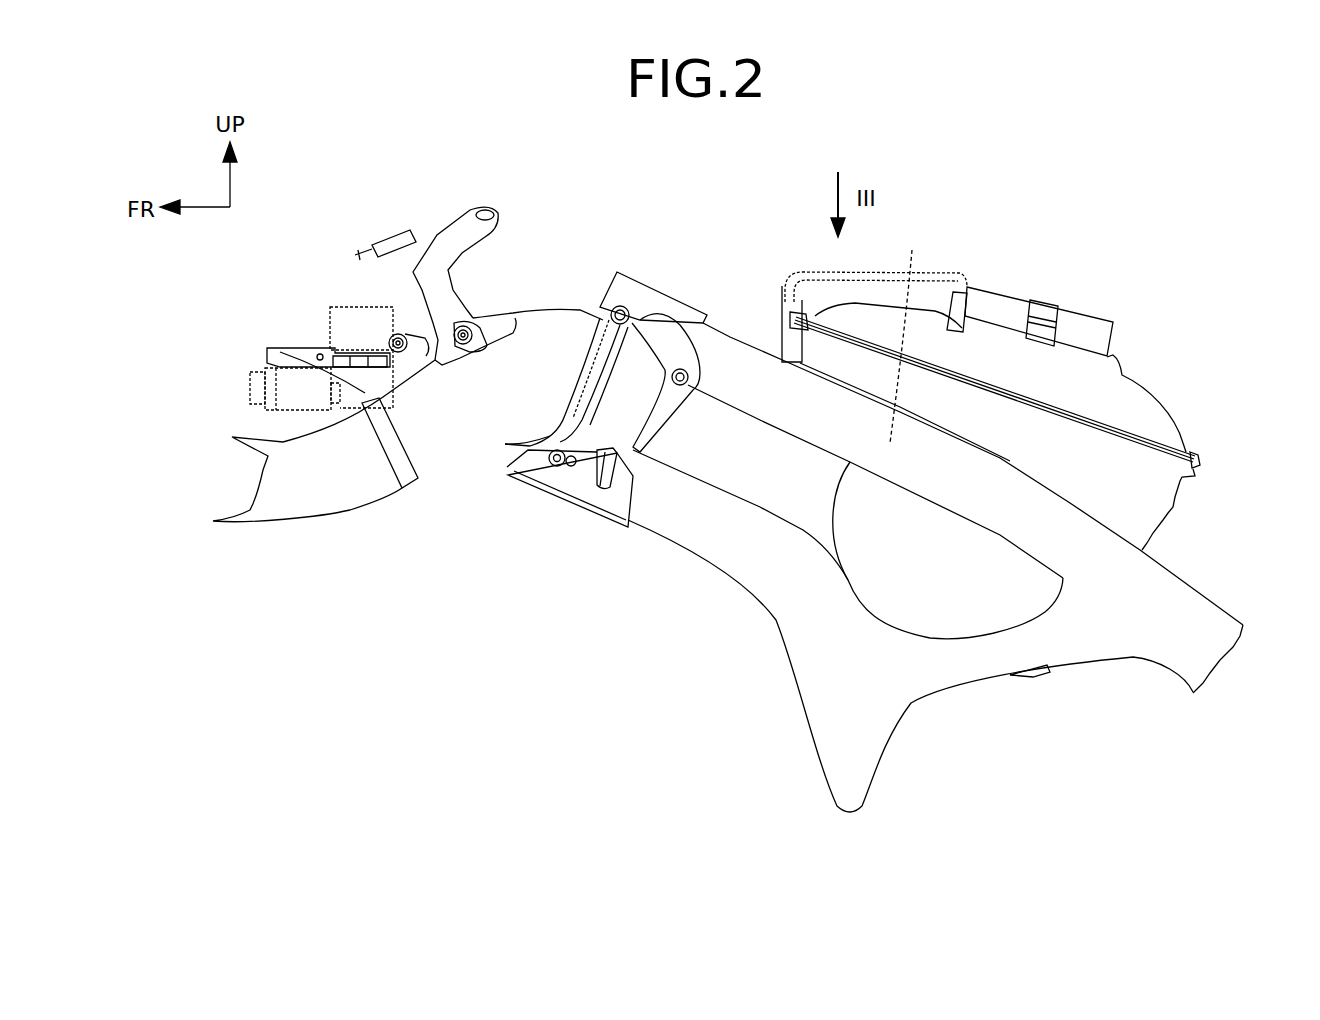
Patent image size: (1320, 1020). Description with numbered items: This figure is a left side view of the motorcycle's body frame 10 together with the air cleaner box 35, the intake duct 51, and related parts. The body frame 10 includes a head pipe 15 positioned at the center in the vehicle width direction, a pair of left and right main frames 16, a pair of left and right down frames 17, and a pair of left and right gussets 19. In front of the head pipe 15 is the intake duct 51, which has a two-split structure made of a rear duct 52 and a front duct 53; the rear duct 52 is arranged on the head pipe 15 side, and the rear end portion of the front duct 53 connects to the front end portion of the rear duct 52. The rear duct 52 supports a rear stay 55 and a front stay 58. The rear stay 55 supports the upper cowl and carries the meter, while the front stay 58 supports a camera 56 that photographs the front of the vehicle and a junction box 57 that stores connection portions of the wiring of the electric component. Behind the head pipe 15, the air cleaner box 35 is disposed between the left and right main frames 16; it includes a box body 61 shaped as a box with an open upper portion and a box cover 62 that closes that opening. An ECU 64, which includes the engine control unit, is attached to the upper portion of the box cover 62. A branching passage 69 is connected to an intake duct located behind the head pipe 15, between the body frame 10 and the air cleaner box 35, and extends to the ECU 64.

The body frame 10 is at (738, 332).
The head pipe 15 is at (643, 294).
The main frames 16 is at (907, 330).
The down frames 17 is at (772, 580).
The gussets 19 is at (722, 457).
The air cleaner box 35 is at (1196, 428).
The intake duct 51 is at (545, 306).
The rear duct 52 is at (483, 455).
The front duct 53 is at (331, 521).
The rear stay 55 is at (443, 221).
The camera 56 is at (247, 387).
The junction box 57 is at (353, 307).
The front stay 58 is at (363, 393).
The box body 61 is at (1174, 509).
The box cover 62 is at (1113, 407).
The ECU 64 is at (1082, 311).
The branching passage 69 is at (823, 275).